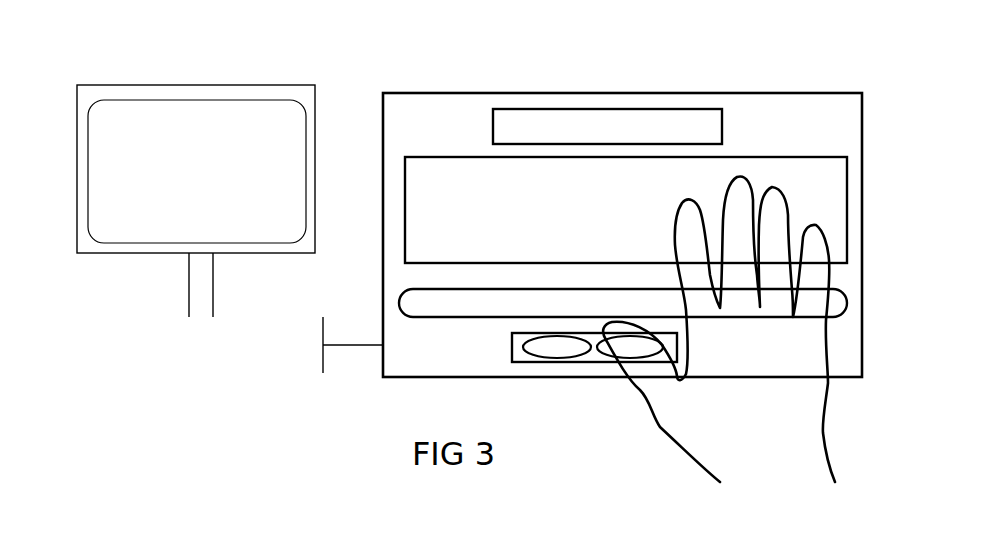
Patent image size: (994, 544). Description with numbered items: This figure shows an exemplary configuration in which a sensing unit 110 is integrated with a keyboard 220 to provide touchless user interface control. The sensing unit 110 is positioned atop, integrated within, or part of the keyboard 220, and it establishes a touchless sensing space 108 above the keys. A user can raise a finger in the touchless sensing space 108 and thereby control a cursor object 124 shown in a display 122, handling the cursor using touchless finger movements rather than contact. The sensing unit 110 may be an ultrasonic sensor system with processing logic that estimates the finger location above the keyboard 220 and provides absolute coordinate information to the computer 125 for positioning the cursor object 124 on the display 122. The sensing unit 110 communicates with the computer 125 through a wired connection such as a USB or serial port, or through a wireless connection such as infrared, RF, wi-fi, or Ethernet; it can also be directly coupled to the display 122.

The keyboard 220 is at (891, 45).
The sensing unit 110 is at (722, 129).
The touchless sensing space 108 is at (527, 205).
The display 122 is at (73, 228).
The cursor object 124 is at (167, 163).
The computer 125 is at (81, 317).